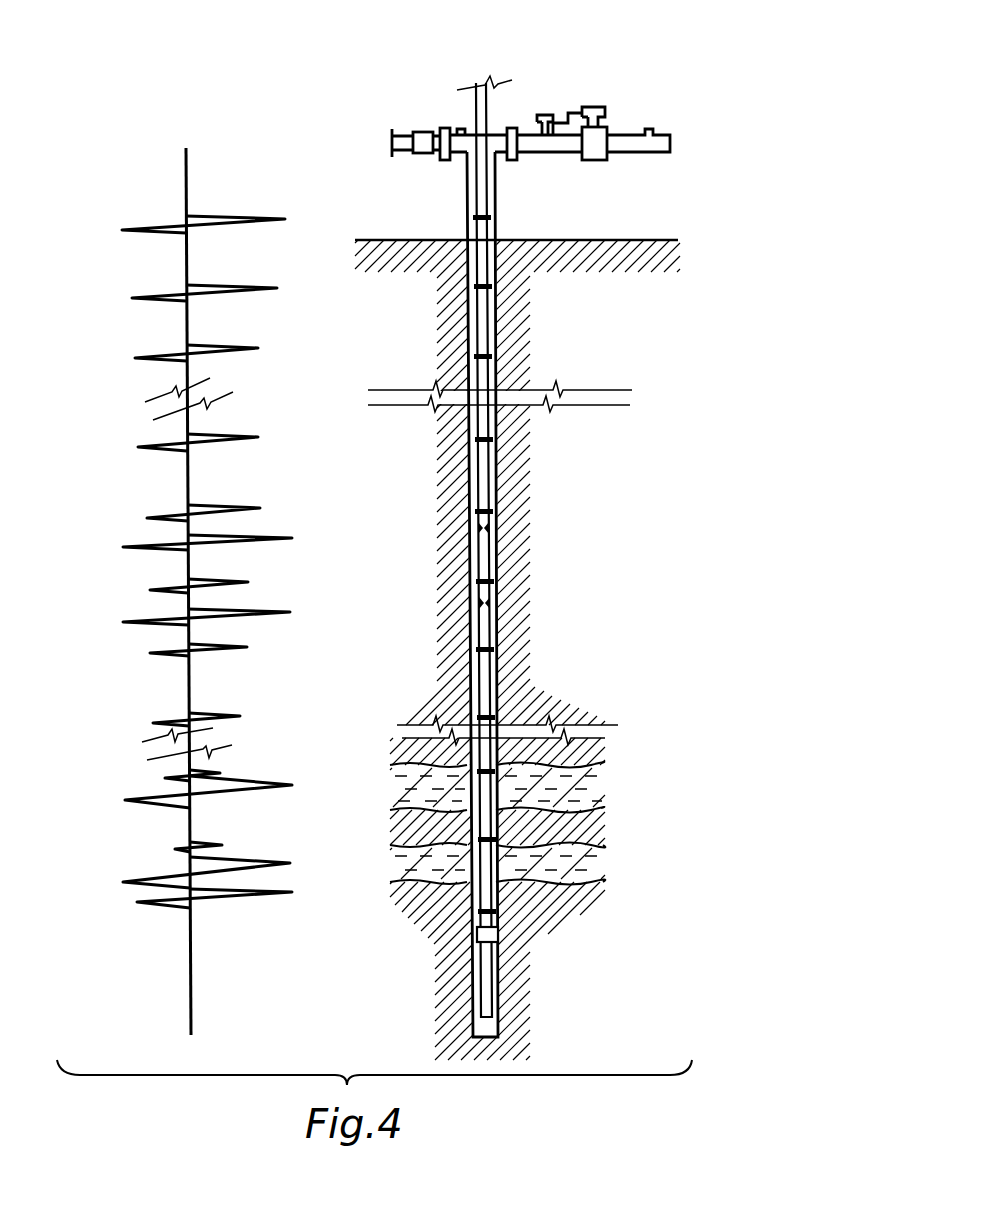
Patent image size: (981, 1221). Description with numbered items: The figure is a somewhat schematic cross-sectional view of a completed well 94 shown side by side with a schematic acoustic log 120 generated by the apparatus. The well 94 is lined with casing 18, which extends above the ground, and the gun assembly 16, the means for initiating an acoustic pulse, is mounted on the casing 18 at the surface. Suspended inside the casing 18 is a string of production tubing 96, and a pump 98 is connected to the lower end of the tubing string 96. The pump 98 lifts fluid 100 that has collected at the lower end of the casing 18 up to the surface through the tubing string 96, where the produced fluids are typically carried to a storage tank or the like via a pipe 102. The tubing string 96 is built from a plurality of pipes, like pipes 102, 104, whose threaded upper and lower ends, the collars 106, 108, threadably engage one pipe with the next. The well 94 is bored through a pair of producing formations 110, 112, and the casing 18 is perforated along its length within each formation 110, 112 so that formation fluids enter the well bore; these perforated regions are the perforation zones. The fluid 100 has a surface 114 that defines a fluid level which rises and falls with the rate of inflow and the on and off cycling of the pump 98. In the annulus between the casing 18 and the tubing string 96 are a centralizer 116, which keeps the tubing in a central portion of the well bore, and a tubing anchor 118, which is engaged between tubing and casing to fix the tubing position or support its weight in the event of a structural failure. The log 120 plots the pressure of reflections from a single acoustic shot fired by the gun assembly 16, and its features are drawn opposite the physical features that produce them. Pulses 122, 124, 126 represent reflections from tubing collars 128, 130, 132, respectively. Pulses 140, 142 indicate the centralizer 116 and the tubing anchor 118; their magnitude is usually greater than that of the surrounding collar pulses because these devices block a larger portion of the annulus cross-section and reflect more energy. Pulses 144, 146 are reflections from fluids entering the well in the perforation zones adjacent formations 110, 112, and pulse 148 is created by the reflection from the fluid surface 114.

The gun assembly 16 is at (576, 95).
The casing 18 is at (497, 188).
The well 94 is at (646, 344).
The production tubing string 96 is at (478, 235).
The pump 98 is at (488, 977).
The fluid 100 is at (488, 1027).
The pipe 102 is at (483, 472).
The pipe 104 is at (484, 560).
The collar 106 is at (491, 582).
The collar 108 is at (502, 642).
The producing formation 110 is at (572, 788).
The producing formation 112 is at (583, 863).
The fluid surface 114 is at (500, 893).
The centralizer 116 is at (475, 529).
The tubing anchor 118 is at (477, 601).
The acoustic log 120 is at (188, 188).
The pulse 122 is at (283, 220).
The pulse 124 is at (273, 288).
The pulse 126 is at (257, 350).
The tubing collar 128 is at (488, 218).
The tubing collar 130 is at (487, 287).
The tubing collar 132 is at (498, 347).
The pulse 140 is at (286, 538).
The pulse 142 is at (292, 610).
The pulse 144 is at (284, 785).
The pulse 146 is at (284, 863).
The pulse 148 is at (283, 894).